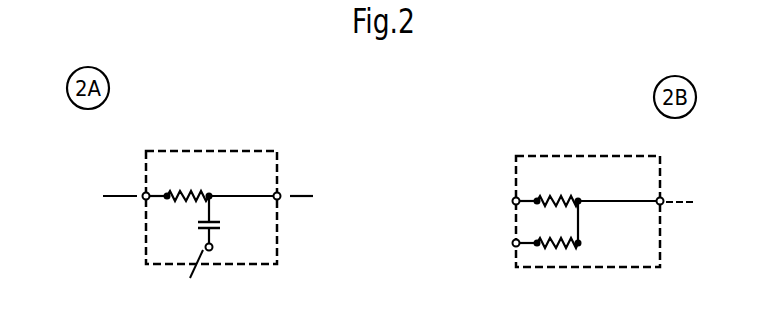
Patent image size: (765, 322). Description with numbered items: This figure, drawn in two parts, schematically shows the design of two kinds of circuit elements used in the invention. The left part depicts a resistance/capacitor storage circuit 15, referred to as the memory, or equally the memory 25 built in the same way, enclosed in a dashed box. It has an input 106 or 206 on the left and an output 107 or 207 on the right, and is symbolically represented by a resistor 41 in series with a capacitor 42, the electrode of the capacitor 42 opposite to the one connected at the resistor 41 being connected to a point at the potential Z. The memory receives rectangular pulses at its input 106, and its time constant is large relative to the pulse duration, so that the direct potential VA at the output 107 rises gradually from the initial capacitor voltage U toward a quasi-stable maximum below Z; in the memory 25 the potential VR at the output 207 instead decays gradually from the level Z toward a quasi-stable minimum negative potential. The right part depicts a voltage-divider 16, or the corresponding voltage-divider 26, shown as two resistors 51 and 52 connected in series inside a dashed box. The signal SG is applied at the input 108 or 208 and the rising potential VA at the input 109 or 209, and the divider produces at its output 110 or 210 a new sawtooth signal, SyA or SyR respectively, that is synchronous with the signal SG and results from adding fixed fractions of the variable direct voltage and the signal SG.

The resistance/capacitor storage circuit 15 is at (180, 146).
The memory 25 is at (238, 146).
The voltage-divider 16 is at (553, 152).
The voltage-divider 26 is at (608, 152).
The resistor 41 is at (195, 187).
The capacitor 42 is at (215, 235).
The resistor 51 is at (568, 193).
The resistor 52 is at (565, 252).
The input 106 is at (95, 225).
The input 206 is at (104, 210).
The output 107 is at (332, 228).
The output 207 is at (319, 210).
The input 108 is at (504, 245).
The input 208 is at (474, 259).
The input 109 is at (504, 198).
The input 209 is at (474, 204).
The output 110 is at (707, 230).
The output 210 is at (696, 215).